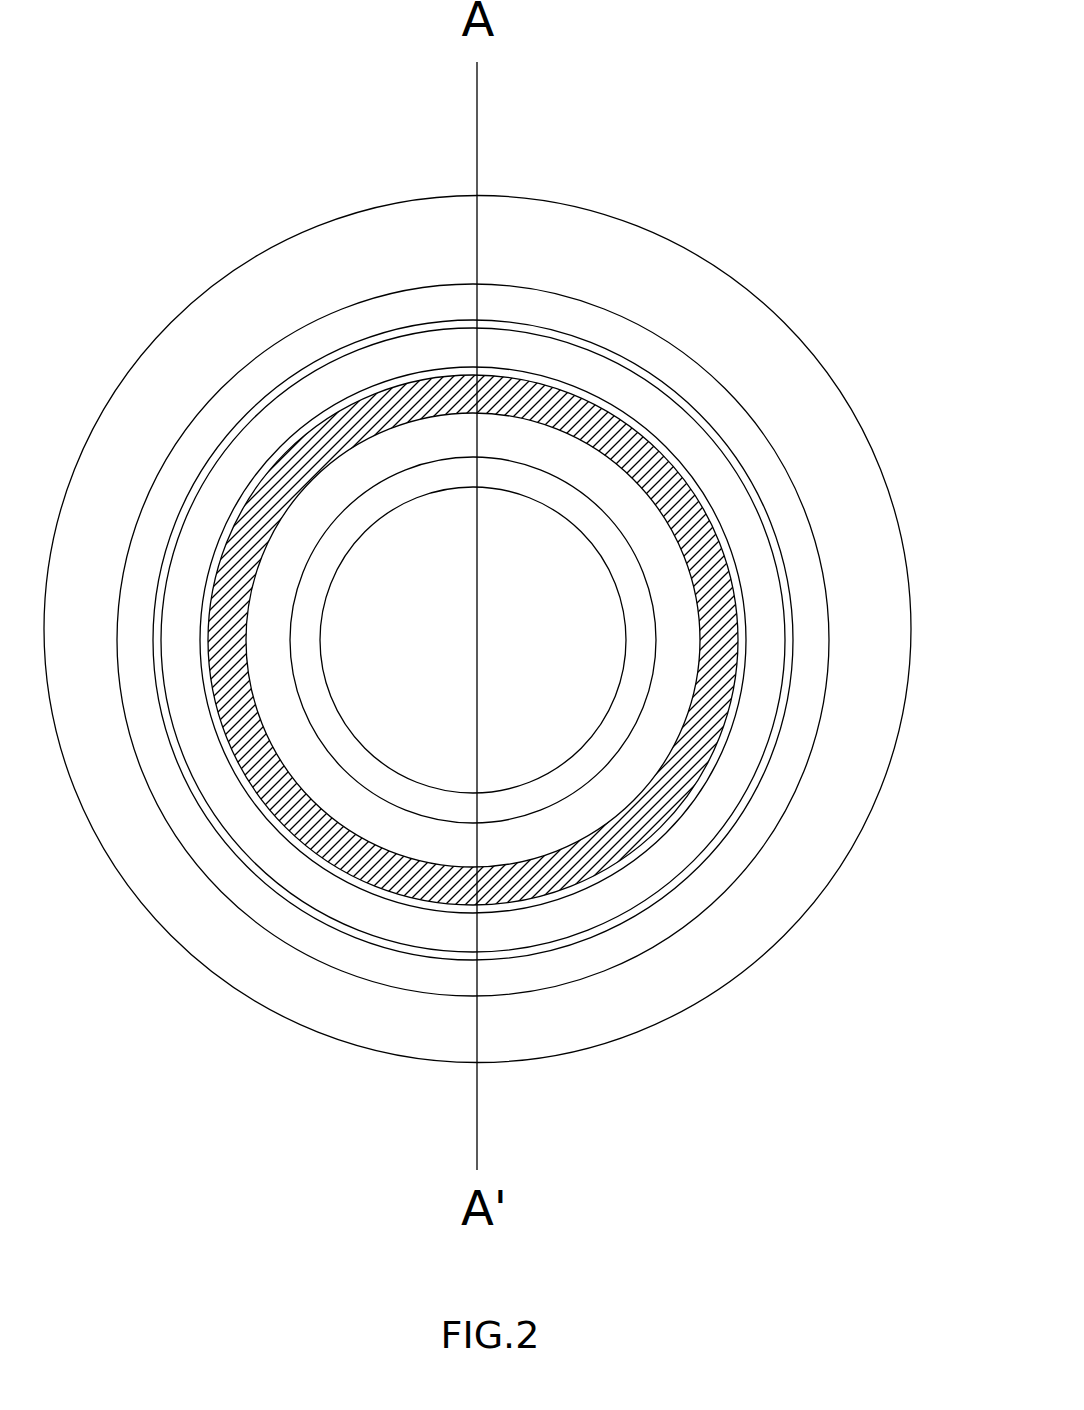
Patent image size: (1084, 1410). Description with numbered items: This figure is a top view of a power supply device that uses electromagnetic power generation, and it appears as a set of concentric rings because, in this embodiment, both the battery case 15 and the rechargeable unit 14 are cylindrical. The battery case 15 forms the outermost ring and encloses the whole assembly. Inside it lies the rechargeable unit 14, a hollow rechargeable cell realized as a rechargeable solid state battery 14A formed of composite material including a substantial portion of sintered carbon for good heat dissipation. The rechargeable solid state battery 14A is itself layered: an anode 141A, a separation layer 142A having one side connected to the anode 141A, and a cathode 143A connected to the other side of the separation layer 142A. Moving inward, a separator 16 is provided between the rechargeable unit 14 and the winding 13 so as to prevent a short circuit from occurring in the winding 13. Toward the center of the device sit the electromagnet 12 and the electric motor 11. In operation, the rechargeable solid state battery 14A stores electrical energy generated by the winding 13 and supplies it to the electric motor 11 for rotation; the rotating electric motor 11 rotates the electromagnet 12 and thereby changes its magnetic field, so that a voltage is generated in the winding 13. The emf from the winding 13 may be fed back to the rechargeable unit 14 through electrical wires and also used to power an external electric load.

The electric motor 11 is at (568, 502).
The electromagnet 12 is at (578, 582).
The winding 13 is at (618, 435).
The rechargeable unit 14 is at (536, 630).
The rechargeable solid state battery 14A is at (536, 630).
The anode 141A is at (753, 453).
The separation layer 142A is at (708, 430).
The cathode 143A is at (677, 428).
The battery case 15 is at (562, 203).
The separator 16 is at (645, 433).